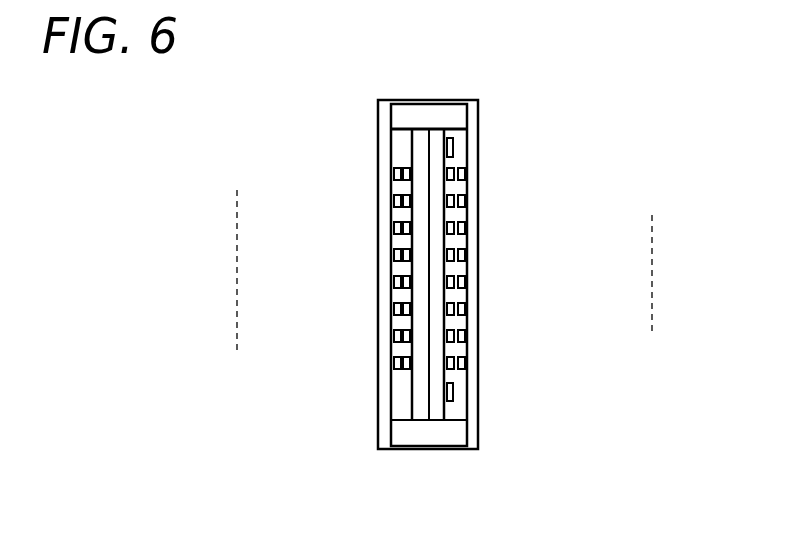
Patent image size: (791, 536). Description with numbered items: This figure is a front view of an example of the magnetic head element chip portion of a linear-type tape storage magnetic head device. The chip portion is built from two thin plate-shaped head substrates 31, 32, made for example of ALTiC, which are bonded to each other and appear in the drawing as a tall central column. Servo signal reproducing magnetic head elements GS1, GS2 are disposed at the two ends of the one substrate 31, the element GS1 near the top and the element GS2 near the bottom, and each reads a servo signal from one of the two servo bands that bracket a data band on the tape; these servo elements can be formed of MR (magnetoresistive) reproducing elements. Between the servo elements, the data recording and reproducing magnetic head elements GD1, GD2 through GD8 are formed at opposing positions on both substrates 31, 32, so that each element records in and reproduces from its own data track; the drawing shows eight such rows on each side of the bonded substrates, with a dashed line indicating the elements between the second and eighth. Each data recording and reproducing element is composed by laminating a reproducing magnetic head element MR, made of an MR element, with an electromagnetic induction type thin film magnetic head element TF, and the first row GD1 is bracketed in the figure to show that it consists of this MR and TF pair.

The head substrate 31 is at (438, 413).
The head substrate 32 is at (422, 413).
The servo signal reproducing magnetic head element GS1 is at (455, 140).
The servo signal reproducing magnetic head element GS2 is at (454, 386).
The data recording and reproducing magnetic head element GD1 is at (440, 166).
The data recording and reproducing magnetic head element GD2 is at (465, 201).
The data recording and reproducing magnetic head element GD8 is at (394, 368).
The reproducing magnetic head element MR is at (403, 172).
The electromagnetic induction type thin film magnetic head element TF is at (394, 174).